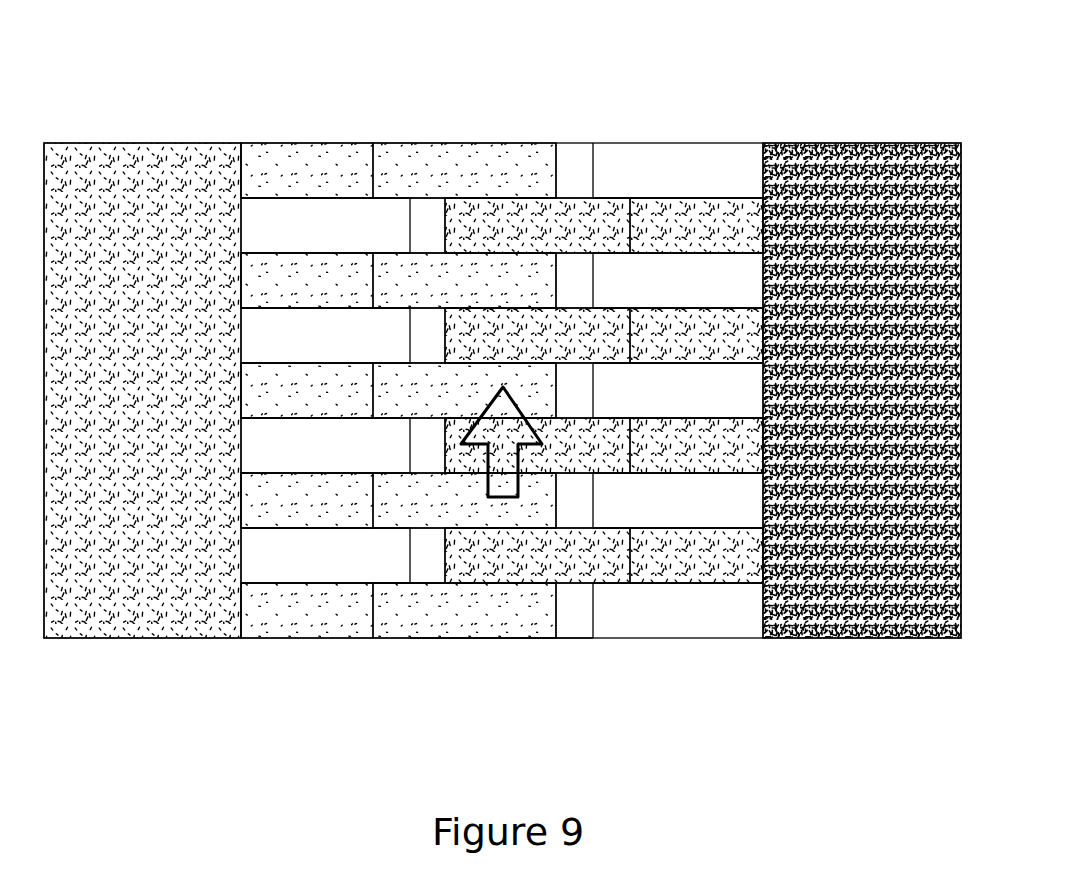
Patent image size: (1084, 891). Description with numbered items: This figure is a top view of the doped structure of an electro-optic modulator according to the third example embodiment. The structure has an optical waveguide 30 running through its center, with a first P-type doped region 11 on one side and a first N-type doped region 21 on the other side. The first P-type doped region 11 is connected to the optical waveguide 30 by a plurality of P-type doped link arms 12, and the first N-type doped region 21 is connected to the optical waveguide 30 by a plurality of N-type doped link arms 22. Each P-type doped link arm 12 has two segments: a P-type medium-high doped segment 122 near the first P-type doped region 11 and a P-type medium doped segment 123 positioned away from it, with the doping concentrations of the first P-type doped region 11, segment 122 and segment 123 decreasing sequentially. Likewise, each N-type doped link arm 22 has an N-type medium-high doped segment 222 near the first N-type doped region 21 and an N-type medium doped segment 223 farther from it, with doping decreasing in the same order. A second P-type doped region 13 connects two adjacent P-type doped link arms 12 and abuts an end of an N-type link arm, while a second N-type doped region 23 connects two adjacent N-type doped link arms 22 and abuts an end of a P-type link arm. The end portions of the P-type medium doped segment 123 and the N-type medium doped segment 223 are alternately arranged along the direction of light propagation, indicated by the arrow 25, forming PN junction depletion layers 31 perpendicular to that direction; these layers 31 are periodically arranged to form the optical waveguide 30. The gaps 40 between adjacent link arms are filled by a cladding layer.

The first P-type doped region 11 is at (143, 165).
The first N-type doped region 21 is at (860, 160).
The P-type doped link arm 12 is at (440, 72).
The P-type medium-high doped segment 122 is at (346, 165).
The P-type medium doped segment 123 is at (483, 165).
The second P-type doped region 13 is at (410, 228).
The N-type doped link arm 22 is at (688, 82).
The N-type medium-high doped segment 222 is at (655, 218).
The N-type medium doped segment 223 is at (493, 215).
The second N-type doped region 23 is at (593, 278).
The arrow indicating direction of light propagation 25 is at (518, 462).
The optical waveguide 30 is at (595, 641).
The PN junction depletion layer 31 is at (452, 590).
The gap 40 is at (270, 222).